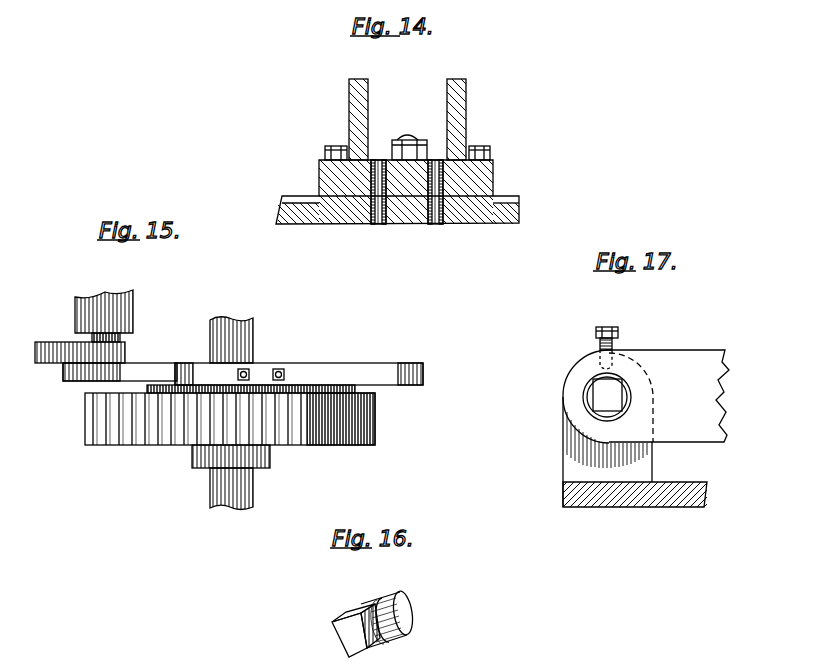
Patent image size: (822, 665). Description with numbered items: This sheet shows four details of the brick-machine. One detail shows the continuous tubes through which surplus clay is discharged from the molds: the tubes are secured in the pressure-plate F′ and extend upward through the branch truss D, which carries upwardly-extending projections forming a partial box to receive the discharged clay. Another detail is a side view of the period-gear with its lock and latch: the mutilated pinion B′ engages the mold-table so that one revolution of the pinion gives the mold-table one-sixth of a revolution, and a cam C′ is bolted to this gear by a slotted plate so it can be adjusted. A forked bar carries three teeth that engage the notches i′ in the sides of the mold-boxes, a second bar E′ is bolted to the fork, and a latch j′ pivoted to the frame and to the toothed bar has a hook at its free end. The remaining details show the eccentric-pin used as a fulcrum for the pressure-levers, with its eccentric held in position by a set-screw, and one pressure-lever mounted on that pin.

In FIG. 14, the branch truss D is at (410, 157).
In FIG. 14, the pressure-plate F′ is at (519, 218).
In FIG. 15, the notches i′ is at (97, 335).
In FIG. 15, the latch j′ is at (56, 355).
In FIG. 15, the block h is at (70, 370).
In FIG. 15, the cam C′ is at (181, 385).
In FIG. 15, the bar E′ is at (362, 377).
In FIG. 15, the mutilated pinion B′ is at (270, 427).